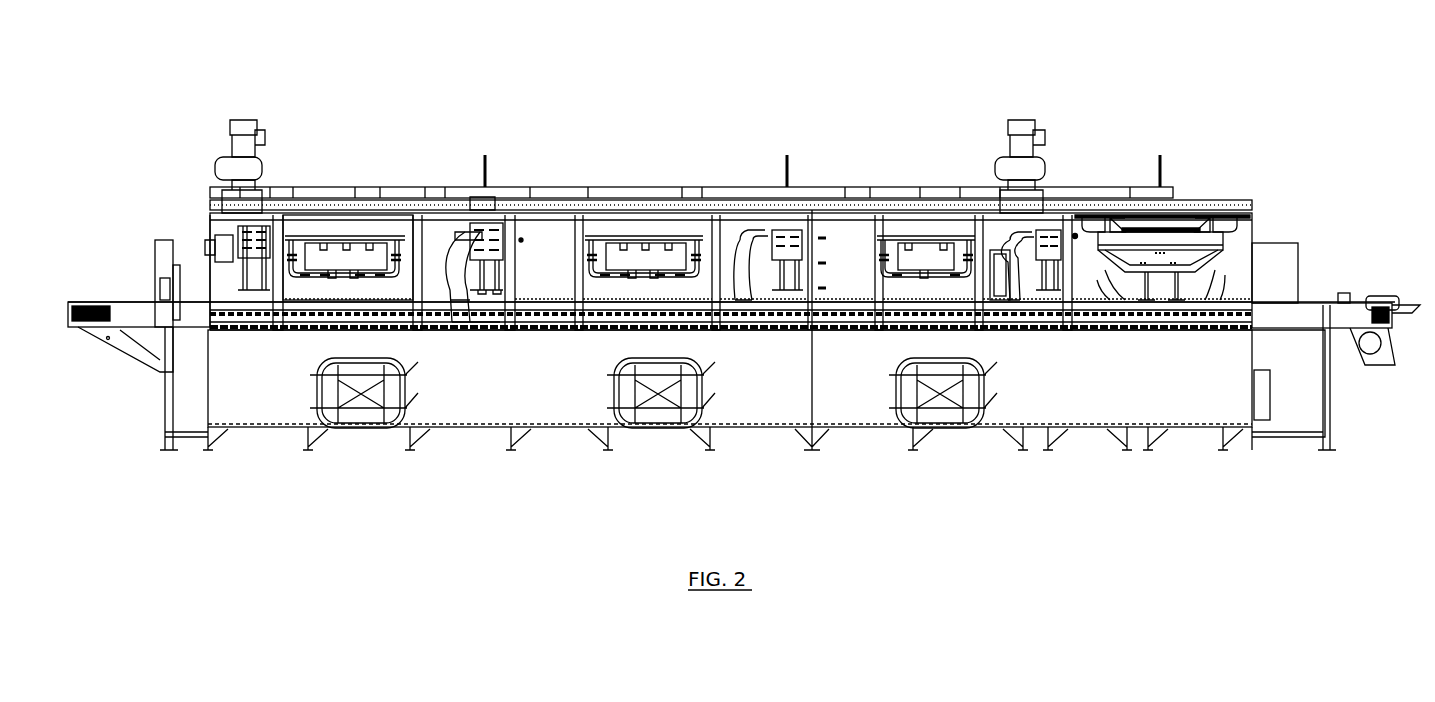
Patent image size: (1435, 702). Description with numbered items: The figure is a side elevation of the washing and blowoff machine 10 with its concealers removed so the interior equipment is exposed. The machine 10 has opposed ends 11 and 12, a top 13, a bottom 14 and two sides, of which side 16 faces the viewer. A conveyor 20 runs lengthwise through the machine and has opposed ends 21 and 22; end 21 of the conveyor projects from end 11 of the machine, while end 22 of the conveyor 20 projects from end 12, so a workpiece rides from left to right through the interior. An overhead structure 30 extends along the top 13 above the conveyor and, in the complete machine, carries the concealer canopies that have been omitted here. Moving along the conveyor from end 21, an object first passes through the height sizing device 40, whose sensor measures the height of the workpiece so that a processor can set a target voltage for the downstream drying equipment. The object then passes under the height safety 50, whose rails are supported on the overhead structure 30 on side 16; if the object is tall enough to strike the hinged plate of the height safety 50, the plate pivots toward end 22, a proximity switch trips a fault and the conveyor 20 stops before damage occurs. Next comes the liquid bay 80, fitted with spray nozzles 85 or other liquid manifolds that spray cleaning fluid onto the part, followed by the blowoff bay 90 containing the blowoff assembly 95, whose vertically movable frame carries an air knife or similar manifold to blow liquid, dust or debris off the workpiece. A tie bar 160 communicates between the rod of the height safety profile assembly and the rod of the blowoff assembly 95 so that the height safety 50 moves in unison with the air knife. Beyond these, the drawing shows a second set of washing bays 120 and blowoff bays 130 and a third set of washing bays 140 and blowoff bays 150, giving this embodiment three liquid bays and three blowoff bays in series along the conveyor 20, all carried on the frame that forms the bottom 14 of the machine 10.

The machine 10 is at (1176, 110).
The end 11 is at (100, 348).
The end 12 is at (1378, 296).
The top 13 is at (628, 187).
The bottom 14 is at (455, 430).
The side 16 is at (335, 220).
The conveyor 20 is at (120, 300).
The end 21 is at (80, 305).
The end 22 is at (1358, 302).
The overhead structure 30 is at (520, 205).
The height sizing device 40 is at (175, 240).
The height safety 50 is at (266, 224).
The liquid bay 80 is at (382, 228).
The spray nozzles 85 is at (349, 232).
The blowoff bay 90 is at (443, 240).
The blowoff assembly 95 is at (468, 230).
The washing bays 120 is at (682, 225).
The blowoff bays 130 is at (758, 232).
The washing bays 140 is at (913, 227).
The blowoff bays 150 is at (1000, 242).
The tie bar 160 is at (552, 193).